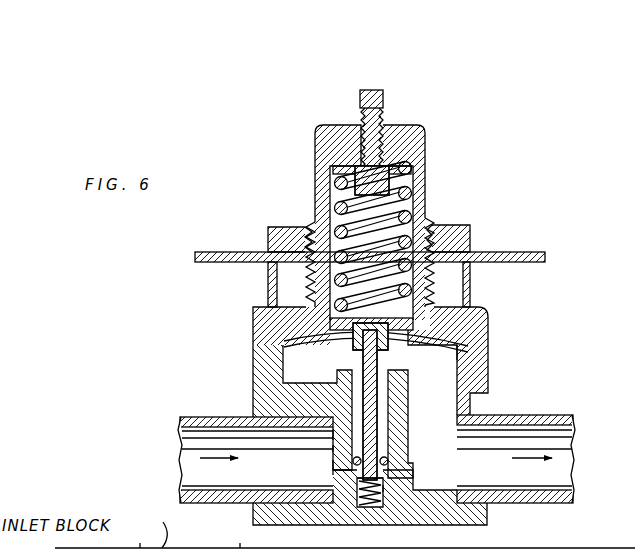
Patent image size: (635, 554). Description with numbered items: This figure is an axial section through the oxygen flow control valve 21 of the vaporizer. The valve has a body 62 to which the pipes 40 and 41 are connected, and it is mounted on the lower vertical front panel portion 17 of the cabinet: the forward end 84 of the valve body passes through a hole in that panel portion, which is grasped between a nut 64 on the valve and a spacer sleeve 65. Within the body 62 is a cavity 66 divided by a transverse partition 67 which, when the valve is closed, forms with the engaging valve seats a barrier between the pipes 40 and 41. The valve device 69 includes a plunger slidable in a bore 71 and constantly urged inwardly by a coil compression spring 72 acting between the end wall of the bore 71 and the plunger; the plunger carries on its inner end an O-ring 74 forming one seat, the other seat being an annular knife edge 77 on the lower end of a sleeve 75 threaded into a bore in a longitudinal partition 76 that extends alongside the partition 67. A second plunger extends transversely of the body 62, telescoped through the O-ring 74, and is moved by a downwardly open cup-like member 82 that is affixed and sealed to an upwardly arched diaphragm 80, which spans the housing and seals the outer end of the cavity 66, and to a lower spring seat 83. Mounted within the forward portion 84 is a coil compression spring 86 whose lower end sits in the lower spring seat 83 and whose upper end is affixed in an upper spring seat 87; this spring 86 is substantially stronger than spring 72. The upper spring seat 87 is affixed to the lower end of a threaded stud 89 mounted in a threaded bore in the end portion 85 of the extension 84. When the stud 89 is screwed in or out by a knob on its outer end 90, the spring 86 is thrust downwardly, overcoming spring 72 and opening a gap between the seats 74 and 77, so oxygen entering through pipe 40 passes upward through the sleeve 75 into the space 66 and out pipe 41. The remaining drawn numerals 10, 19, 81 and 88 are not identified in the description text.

The valve seat 10 is at (384, 488).
The lower vertical front panel portion 17 is at (241, 252).
The guide bushing 19 is at (409, 404).
The oxygen flow control valve 21 is at (460, 207).
The pipe 40 is at (221, 417).
The pipe 41 is at (548, 425).
The valve body 62 is at (256, 525).
The nut 64 is at (471, 234).
The spacer sleeve 65 is at (472, 290).
The cavity 66 is at (470, 348).
The transverse partition 67 is at (418, 428).
The valve device 69 is at (331, 468).
The bore 71 is at (357, 508).
The coil compression spring 72 is at (378, 506).
The O-ring 74 is at (378, 457).
The sleeve 75 is at (334, 436).
The longitudinal partition 76 is at (250, 403).
The annular knife edge 77 is at (338, 449).
The upwardly arched diaphragm 80 is at (478, 322).
The upper body left 81 is at (253, 323).
The cup-like member 82 is at (352, 360).
The lower spring seat 83 is at (285, 340).
The forward end of valve body 84 is at (422, 194).
The end portion 85 is at (330, 140).
The coil compression spring 86 is at (336, 226).
The upper spring seat 87 is at (334, 170).
The housing assembly 88 is at (430, 172).
The threaded stud 89 is at (390, 135).
The outer end of stud 90 is at (369, 90).